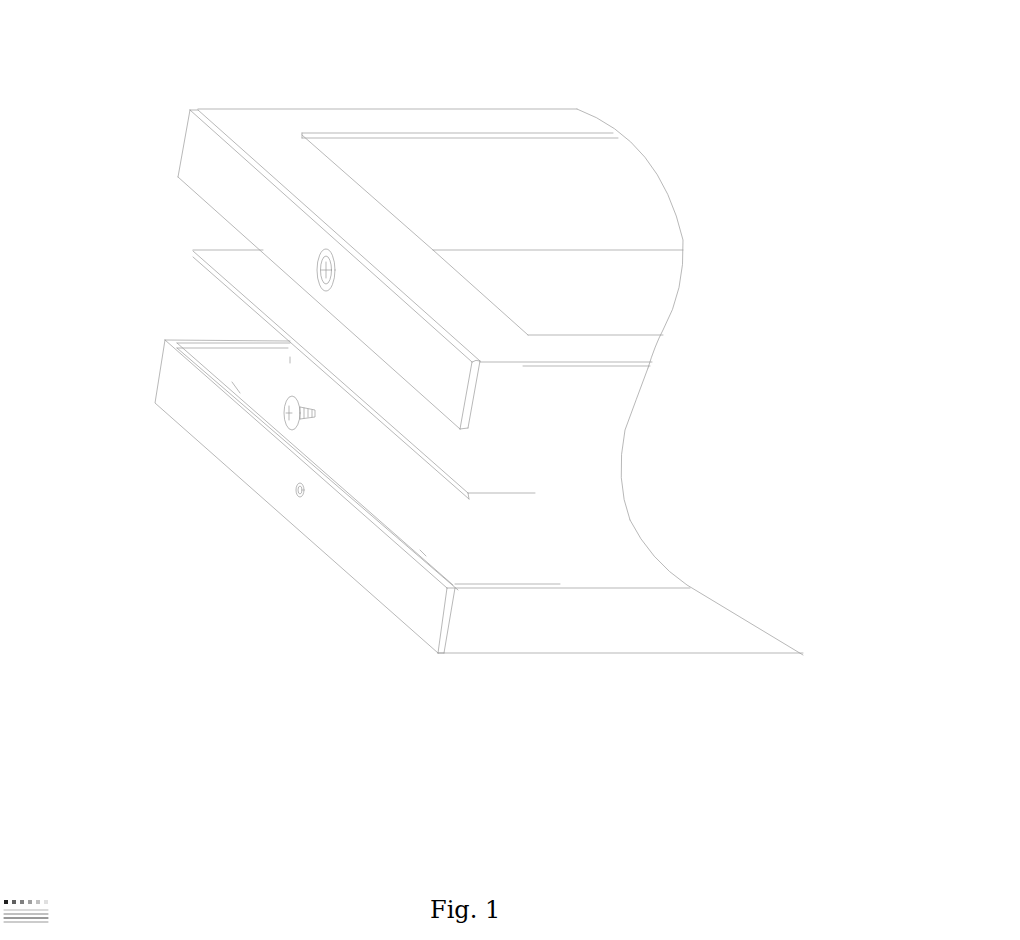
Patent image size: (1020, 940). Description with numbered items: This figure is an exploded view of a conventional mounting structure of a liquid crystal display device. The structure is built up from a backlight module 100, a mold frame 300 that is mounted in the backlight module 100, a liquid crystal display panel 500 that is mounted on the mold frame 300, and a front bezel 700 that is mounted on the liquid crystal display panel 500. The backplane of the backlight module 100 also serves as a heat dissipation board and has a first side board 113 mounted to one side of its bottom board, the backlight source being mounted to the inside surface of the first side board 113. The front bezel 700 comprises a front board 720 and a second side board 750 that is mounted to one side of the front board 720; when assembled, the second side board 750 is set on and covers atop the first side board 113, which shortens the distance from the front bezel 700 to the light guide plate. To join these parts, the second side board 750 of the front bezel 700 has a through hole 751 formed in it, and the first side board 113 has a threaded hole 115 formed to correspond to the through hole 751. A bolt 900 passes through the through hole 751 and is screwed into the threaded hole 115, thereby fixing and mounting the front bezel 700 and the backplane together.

The backlight module 100 is at (610, 548).
The first side board 113 is at (380, 568).
The threaded hole 115 is at (298, 492).
The mold frame 300 is at (205, 352).
The liquid crystal display panel 500 is at (572, 477).
The front bezel 700 is at (595, 353).
The front board 720 is at (289, 118).
The second side board 750 is at (213, 178).
The through hole 751 is at (318, 272).
The bolt 900 is at (292, 413).